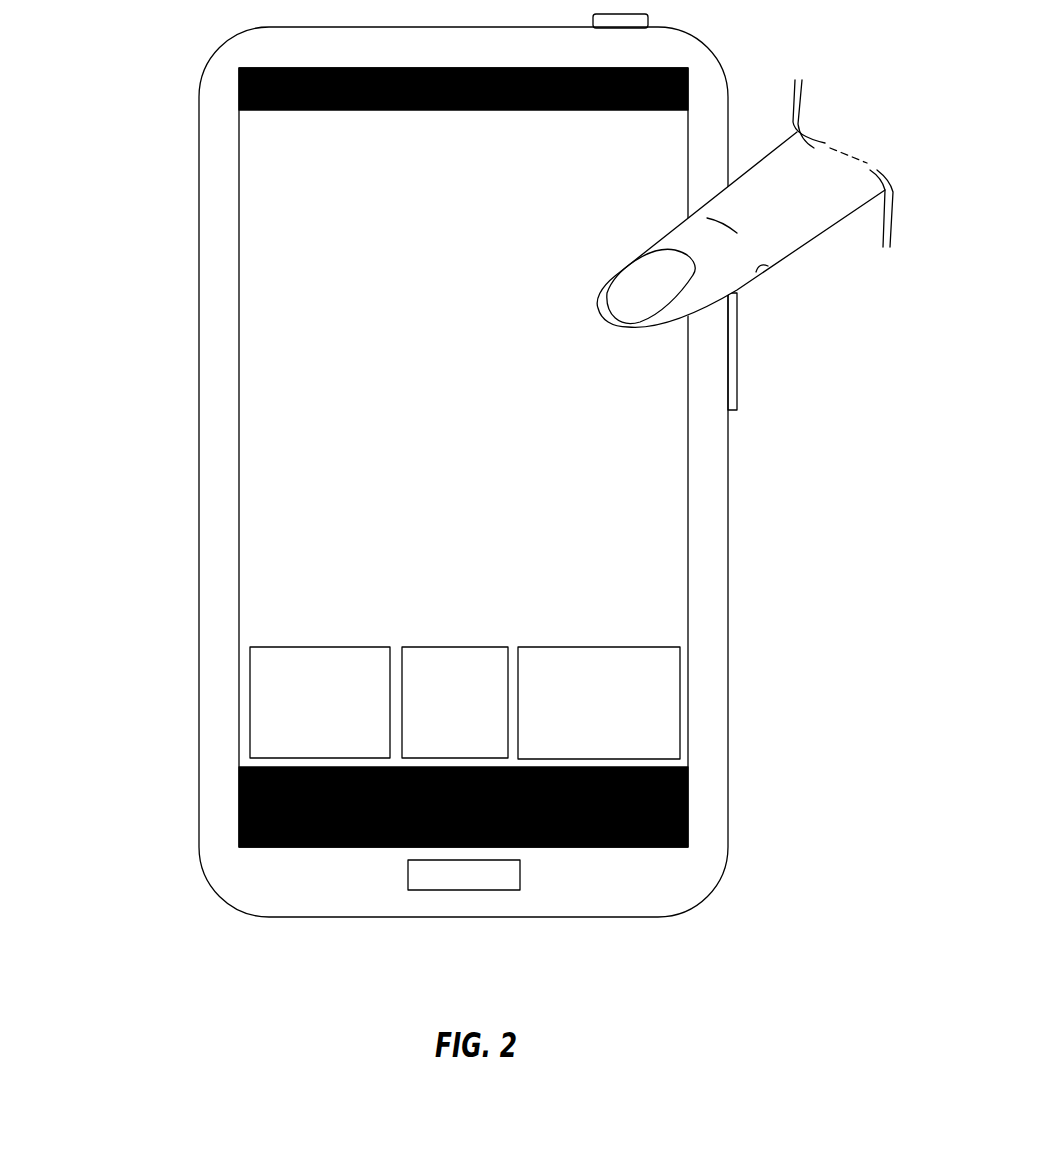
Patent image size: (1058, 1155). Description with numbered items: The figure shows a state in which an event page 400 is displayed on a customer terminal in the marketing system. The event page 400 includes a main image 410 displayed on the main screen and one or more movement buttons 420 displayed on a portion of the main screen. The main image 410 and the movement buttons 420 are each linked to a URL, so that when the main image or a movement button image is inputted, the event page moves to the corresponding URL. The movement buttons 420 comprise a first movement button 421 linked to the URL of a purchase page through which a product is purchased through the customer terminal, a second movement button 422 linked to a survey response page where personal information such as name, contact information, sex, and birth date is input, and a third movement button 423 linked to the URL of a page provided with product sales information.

The event page 400 is at (226, 168).
The main image 410 is at (334, 411).
The movement button 420 is at (586, 649).
The first movement button 421 is at (345, 647).
The second movement button 422 is at (447, 647).
The third movement button 423 is at (667, 703).